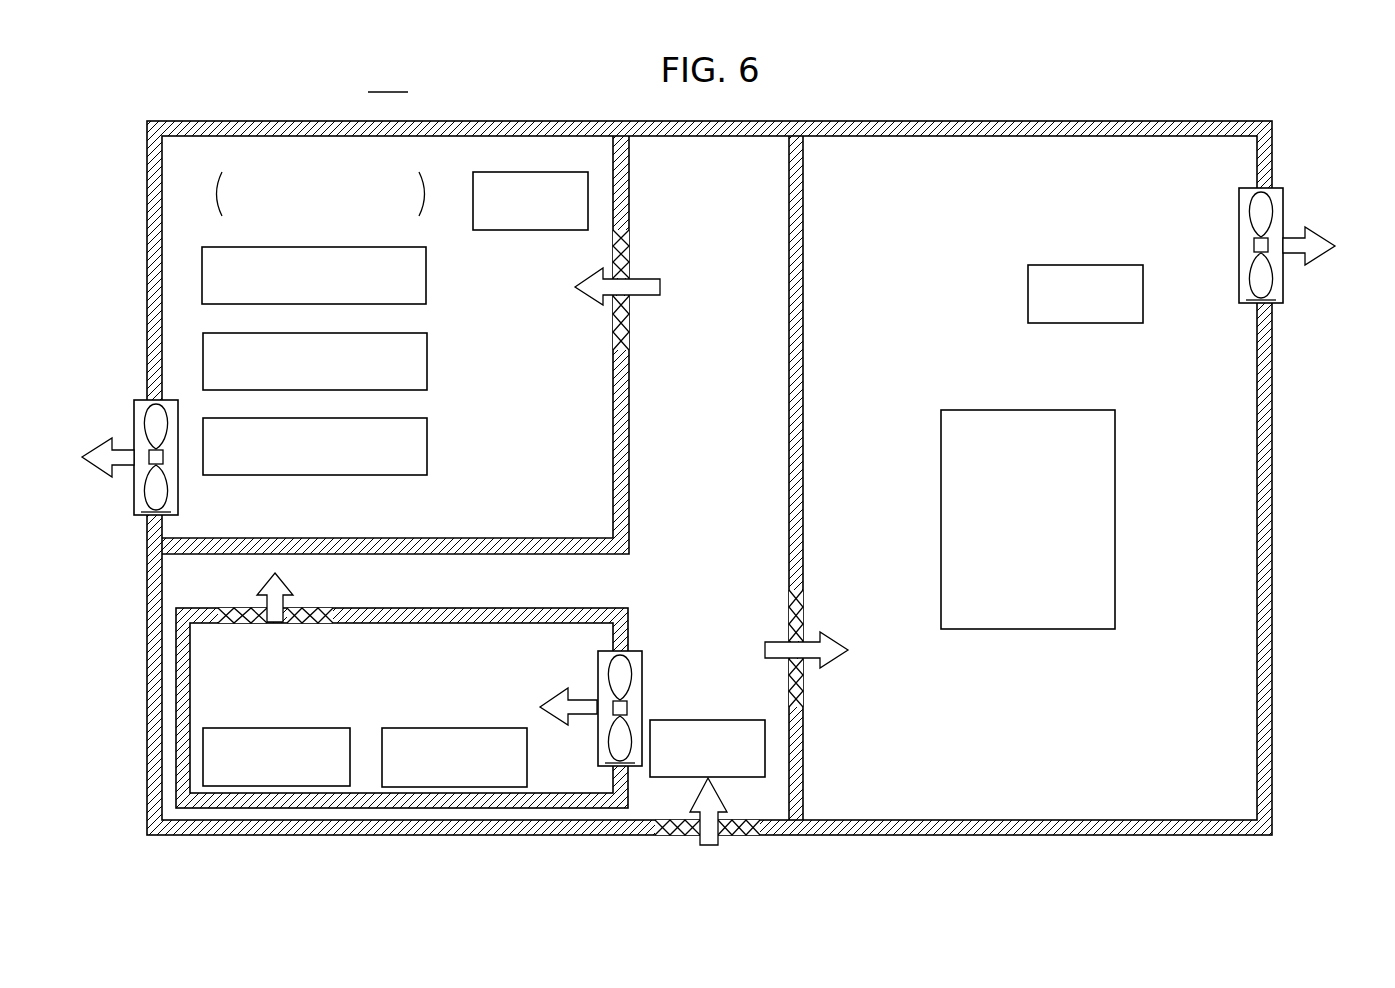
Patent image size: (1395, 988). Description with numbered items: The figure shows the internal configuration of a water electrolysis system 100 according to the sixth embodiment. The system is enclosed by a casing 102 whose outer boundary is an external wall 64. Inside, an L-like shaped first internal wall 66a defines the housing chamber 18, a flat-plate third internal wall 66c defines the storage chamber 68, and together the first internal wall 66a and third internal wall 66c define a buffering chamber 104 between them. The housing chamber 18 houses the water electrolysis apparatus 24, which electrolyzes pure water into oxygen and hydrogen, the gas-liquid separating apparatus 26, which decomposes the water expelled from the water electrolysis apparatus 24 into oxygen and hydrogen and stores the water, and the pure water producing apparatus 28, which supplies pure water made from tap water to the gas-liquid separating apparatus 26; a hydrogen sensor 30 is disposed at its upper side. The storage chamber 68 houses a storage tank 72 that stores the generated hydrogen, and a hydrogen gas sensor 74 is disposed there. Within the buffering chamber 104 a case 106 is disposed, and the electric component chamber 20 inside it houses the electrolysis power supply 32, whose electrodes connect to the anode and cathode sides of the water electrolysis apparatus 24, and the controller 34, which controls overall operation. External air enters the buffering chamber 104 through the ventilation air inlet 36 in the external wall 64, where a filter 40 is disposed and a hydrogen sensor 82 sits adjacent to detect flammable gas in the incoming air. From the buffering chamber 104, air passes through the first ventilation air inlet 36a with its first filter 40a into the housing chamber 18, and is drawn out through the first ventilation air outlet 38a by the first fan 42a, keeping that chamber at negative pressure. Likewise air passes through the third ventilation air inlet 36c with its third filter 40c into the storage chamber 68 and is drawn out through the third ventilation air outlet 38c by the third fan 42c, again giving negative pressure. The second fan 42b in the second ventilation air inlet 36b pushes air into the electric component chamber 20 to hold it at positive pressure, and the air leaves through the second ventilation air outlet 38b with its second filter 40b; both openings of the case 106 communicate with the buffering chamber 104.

The water electrolysis system 100 is at (388, 80).
The casing 102 is at (1296, 134).
The buffering chamber 104 is at (777, 440).
The case 106 is at (418, 608).
The housing chamber 18 is at (568, 145).
The electric component chamber 20 is at (555, 630).
The water electrolysis apparatus 24 is at (426, 270).
The gas-liquid separating apparatus 26 is at (427, 357).
The pure water producing apparatus 28 is at (427, 442).
The hydrogen sensor 30 is at (531, 232).
The electrolysis power supply 32 is at (278, 727).
The controller 34 is at (454, 727).
The ventilation air inlet 36 is at (750, 838).
The first ventilation air inlet 36a is at (627, 336).
The second ventilation air inlet 36b is at (612, 764).
The third ventilation air inlet 36c is at (799, 700).
The first ventilation air outlet 38a is at (152, 513).
The second ventilation air outlet 38b is at (228, 608).
The third ventilation air outlet 38c is at (1252, 300).
The filter 40 is at (676, 838).
The first filter 40a is at (630, 254).
The second filter 40b is at (312, 608).
The third filter 40c is at (797, 613).
The first fan 42a is at (134, 420).
The second fan 42b is at (633, 651).
The third fan 42c is at (1239, 206).
The external wall 64 is at (1273, 342).
The first internal wall 66a is at (623, 483).
The third internal wall 66c is at (797, 485).
The storage chamber 68 is at (886, 147).
The storage tank 72 is at (1115, 515).
The hydrogen gas sensor 74 is at (1086, 325).
The hydrogen sensor 82 is at (707, 719).